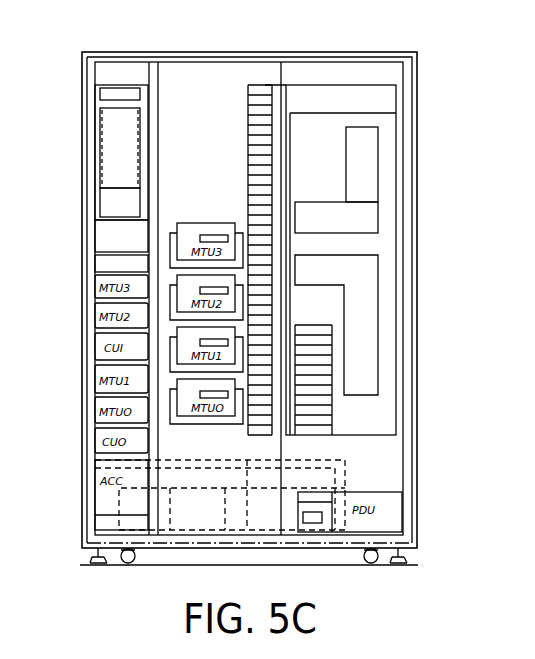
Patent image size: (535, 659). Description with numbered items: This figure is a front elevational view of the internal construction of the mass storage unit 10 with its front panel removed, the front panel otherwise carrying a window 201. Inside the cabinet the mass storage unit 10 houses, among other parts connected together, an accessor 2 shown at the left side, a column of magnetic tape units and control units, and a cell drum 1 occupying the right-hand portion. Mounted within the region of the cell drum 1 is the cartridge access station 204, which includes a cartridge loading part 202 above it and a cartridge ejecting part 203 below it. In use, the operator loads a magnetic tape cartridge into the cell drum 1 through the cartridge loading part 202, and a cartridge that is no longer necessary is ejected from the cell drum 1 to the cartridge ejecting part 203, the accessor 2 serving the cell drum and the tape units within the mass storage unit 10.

The mass storage unit 10 is at (404, 51).
The window 201 is at (322, 81).
The cell drum 1 is at (372, 98).
The accessor 2 is at (108, 143).
The cartridge loading part 202 is at (370, 156).
The cartridge access station 204 is at (370, 213).
The cartridge ejecting part 203 is at (367, 308).